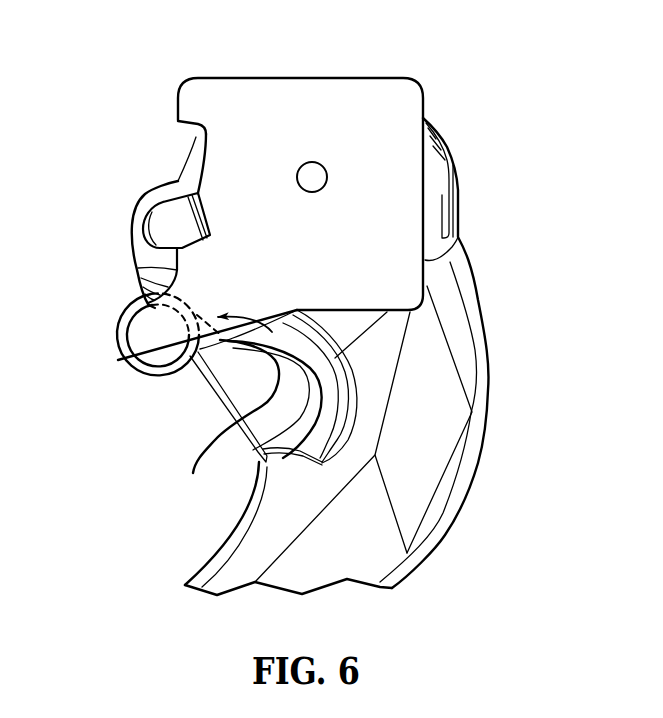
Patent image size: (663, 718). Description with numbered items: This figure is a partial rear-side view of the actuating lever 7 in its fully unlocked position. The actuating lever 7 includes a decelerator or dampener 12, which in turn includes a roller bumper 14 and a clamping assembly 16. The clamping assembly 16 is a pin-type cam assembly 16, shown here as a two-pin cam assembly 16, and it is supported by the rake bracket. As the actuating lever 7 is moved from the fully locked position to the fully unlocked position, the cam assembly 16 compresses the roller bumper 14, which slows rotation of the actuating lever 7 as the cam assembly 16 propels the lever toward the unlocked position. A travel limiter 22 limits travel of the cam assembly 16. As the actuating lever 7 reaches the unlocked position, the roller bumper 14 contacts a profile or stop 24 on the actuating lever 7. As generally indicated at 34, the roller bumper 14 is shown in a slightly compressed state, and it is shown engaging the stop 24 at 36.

The actuating lever 7 is at (515, 229).
The decelerator or dampener 12 is at (182, 143).
The roller bumper 14 is at (122, 362).
The clamping assembly 16 is at (335, 78).
The travel limiter 22 is at (170, 221).
The stop 24 is at (138, 268).
The slightly compressed state of roller bumper 34 is at (197, 440).
The engagement of roller bumper with stop 36 is at (135, 295).